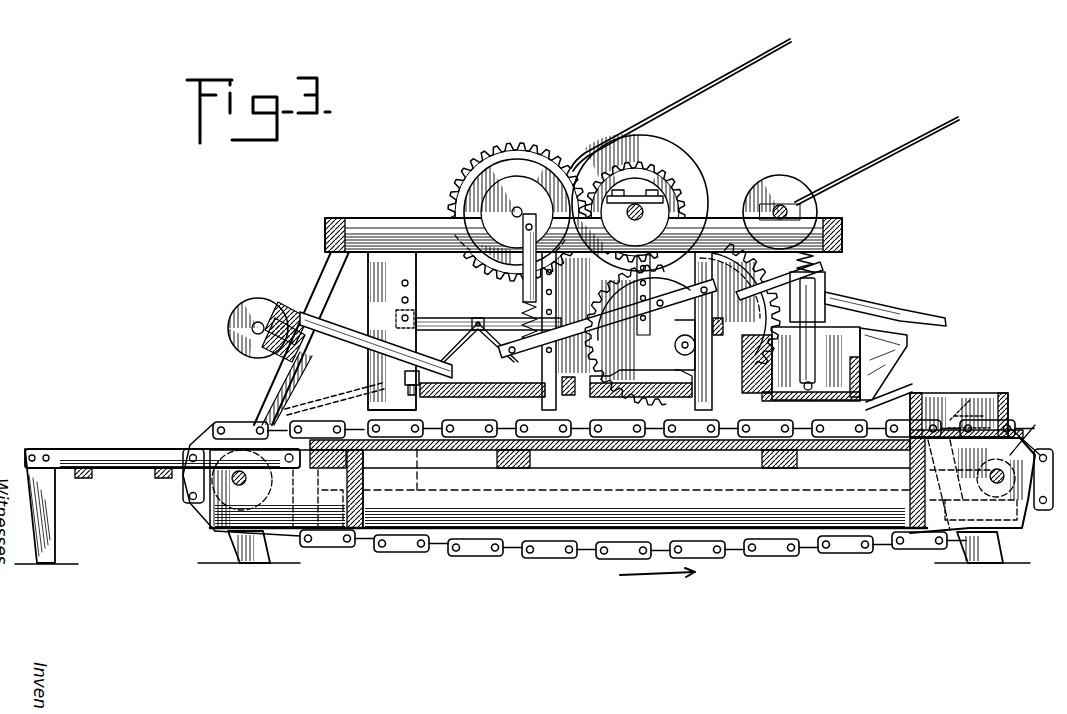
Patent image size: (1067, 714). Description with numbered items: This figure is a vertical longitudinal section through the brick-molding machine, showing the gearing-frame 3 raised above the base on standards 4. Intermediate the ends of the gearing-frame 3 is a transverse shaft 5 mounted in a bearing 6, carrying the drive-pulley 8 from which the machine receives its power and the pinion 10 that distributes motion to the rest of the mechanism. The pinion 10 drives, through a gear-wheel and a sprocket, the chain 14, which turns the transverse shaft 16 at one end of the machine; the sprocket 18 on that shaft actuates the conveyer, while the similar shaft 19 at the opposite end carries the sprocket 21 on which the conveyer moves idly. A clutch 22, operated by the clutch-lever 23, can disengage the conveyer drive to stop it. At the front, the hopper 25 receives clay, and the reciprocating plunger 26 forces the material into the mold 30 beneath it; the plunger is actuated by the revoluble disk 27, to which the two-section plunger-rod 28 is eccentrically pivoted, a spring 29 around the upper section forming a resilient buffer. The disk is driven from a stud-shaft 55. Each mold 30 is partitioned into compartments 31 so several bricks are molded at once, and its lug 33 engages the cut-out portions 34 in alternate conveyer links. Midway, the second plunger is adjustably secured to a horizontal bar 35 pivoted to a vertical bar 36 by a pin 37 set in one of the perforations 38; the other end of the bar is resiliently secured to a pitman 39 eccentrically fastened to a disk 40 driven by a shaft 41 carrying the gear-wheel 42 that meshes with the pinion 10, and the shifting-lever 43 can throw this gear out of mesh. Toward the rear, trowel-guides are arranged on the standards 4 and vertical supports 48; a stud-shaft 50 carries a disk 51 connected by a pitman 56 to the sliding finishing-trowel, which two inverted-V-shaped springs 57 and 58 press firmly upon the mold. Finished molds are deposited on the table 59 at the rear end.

The gearing-frame 3 is at (412, 224).
The standards 4 is at (372, 313).
The transverse shaft 5 is at (688, 182).
The bearing 6 is at (641, 205).
The drive-pulley 8 is at (604, 145).
The pinion 10 is at (698, 203).
The chain 14 is at (355, 397).
The transverse shaft 16 is at (232, 481).
The sprocket 18 is at (215, 508).
The shaft 19 is at (988, 485).
The sprocket 21 is at (1022, 440).
The clutch 22 is at (249, 566).
The clutch-lever 23 is at (880, 395).
The hopper 25 is at (900, 342).
The reciprocating plunger 26 is at (820, 356).
The revoluble disk 27 is at (796, 190).
The plunger-rod 28 is at (843, 238).
The spring 29 is at (818, 268).
The mold 30 is at (1006, 396).
The compartments 31 is at (972, 392).
The lug 33 is at (637, 335).
The cut-out portions 34 is at (432, 555).
The horizontal bar 35 is at (678, 342).
The vertical bar 36 is at (708, 308).
The pin 37 is at (744, 282).
The perforations 38 is at (640, 295).
The pitman 39 is at (522, 292).
The disk 40 is at (483, 193).
The shaft 41 is at (462, 170).
The gear-wheel 42 is at (503, 150).
The shifting-lever 43 is at (868, 314).
The vertical supports 48 is at (540, 400).
The stud-shaft 50 is at (252, 327).
The disk 51 is at (238, 340).
The stud-shaft 55 is at (805, 206).
The pitman 56 is at (362, 352).
The inverted-V-shaped spring 57 is at (405, 378).
The inverted-V-shaped spring 58 is at (479, 340).
The table 59 is at (108, 447).